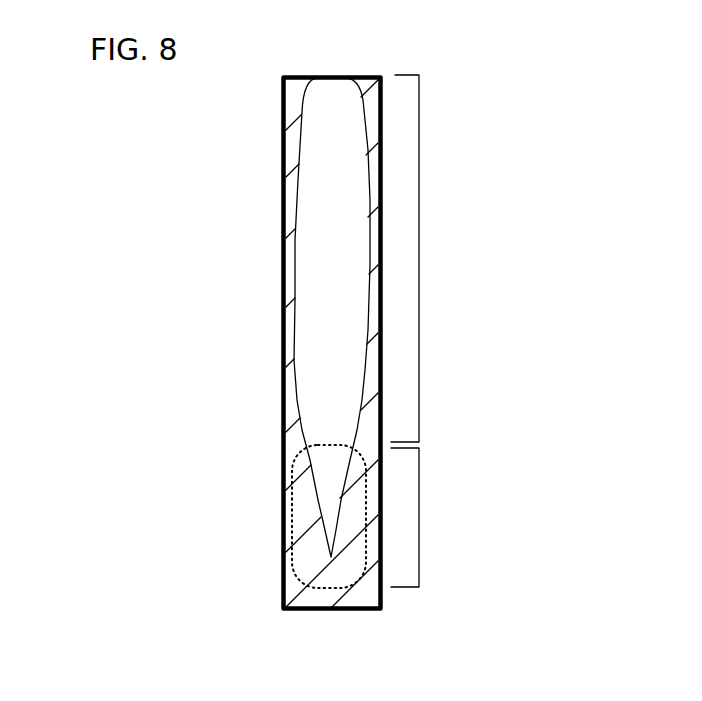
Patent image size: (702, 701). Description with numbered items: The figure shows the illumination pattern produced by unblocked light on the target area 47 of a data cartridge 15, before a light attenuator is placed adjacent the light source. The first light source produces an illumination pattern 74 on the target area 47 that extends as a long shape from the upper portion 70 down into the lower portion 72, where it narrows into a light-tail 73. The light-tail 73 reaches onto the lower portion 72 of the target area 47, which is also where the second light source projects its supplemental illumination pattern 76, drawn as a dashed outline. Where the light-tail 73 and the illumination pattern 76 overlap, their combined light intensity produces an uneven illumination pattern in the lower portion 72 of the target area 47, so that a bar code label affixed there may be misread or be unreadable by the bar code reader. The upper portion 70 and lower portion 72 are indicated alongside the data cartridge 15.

The data cartridge 15 is at (283, 138).
The target area 47 is at (290, 207).
The upper portion 70 is at (419, 232).
The lower portion 72 is at (419, 470).
The light-tail 73 is at (318, 459).
The illumination pattern 74 is at (351, 245).
The illumination pattern 76 is at (292, 578).